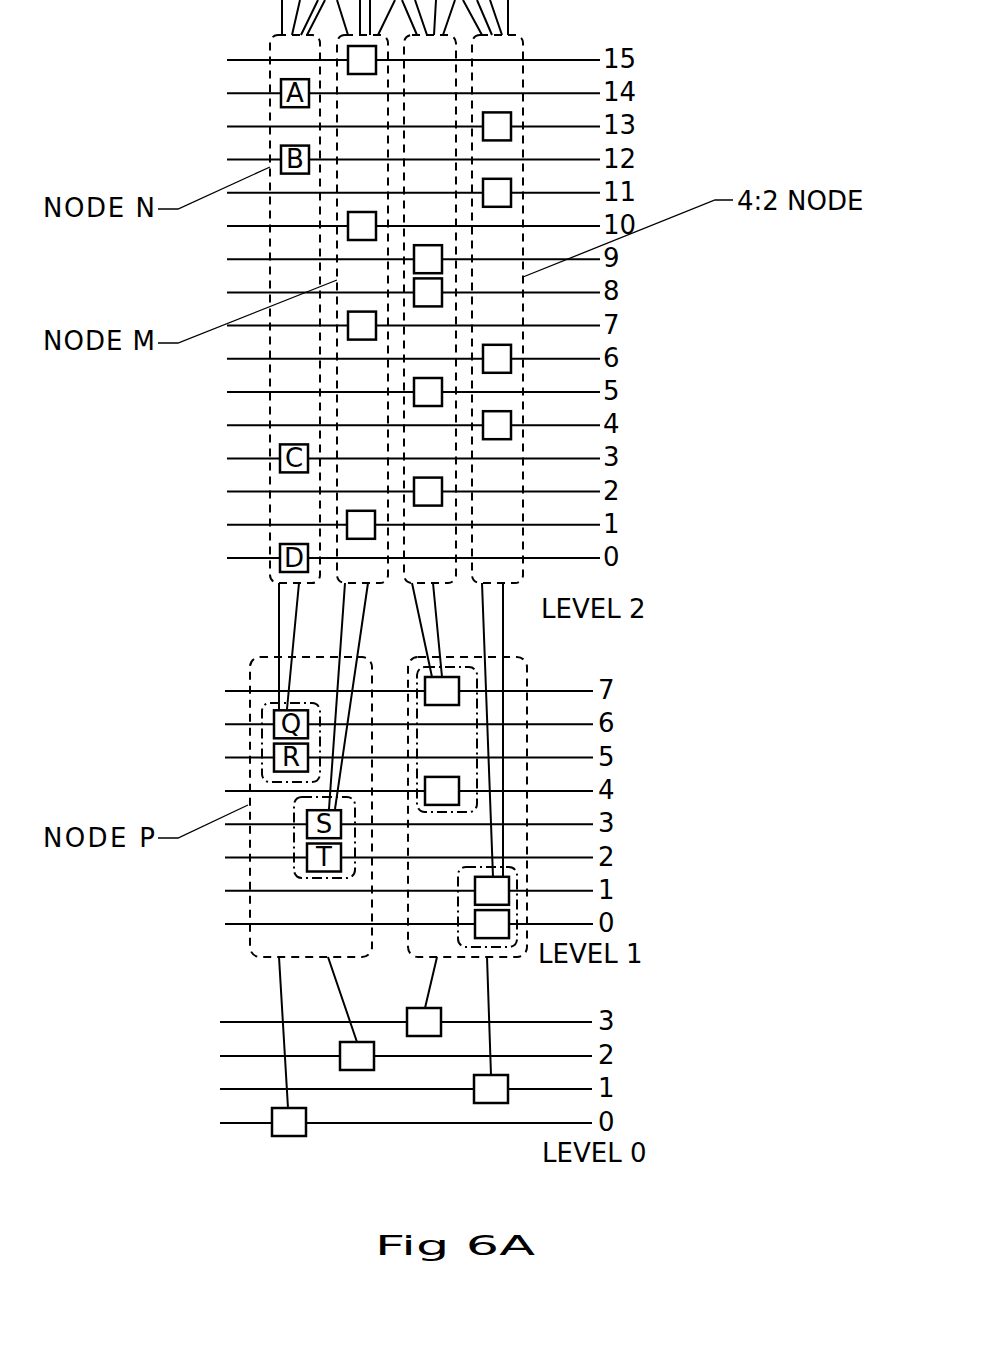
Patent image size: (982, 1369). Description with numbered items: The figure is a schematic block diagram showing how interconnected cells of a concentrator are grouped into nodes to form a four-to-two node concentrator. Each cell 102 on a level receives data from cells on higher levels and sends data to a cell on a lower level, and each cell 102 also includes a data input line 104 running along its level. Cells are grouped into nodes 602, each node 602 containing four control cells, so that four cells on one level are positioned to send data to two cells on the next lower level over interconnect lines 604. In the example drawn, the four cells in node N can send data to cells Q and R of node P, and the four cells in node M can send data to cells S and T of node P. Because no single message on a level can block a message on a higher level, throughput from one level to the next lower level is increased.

The cell 102 is at (503, 1073).
The data input line 104 is at (580, 425).
The node 602 is at (523, 175).
The interconnect lines 604 is at (280, 607).